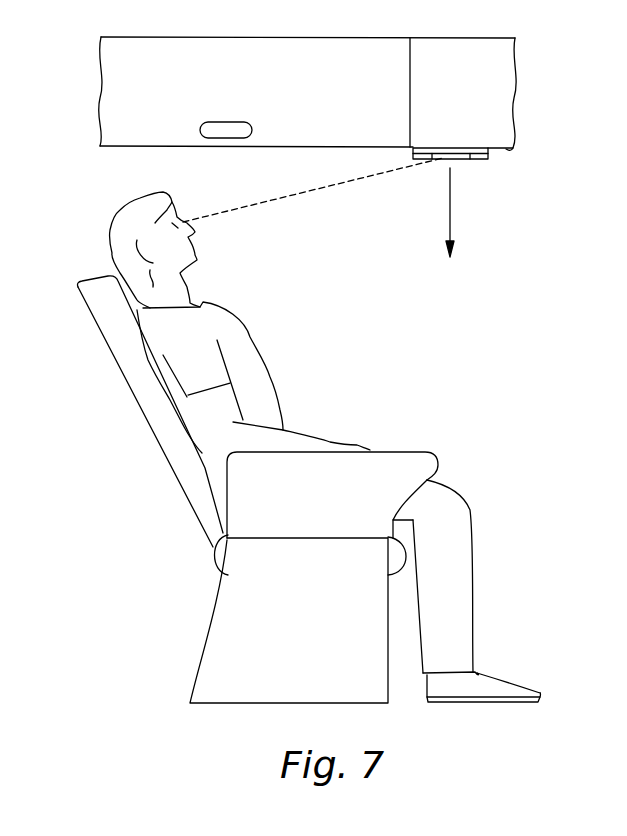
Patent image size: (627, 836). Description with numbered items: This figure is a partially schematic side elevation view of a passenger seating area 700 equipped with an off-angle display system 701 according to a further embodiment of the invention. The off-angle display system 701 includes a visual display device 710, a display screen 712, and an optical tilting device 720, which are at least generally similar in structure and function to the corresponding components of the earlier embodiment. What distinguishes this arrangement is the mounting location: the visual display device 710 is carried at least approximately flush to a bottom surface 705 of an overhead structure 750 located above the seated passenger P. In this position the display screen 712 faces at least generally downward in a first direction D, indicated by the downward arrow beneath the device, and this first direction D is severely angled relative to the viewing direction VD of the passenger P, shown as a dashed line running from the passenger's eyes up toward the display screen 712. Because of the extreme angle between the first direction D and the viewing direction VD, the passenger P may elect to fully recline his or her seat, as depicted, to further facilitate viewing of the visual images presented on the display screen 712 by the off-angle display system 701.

The passenger seating area 700 is at (447, 344).
The off-angle display system 701 is at (430, 193).
The bottom surface 705 is at (505, 157).
The visual display device 710 is at (410, 147).
The display screen 712 is at (432, 162).
The optical tilting device 720 is at (472, 162).
The overhead structure 750 is at (197, 96).
The passenger P is at (117, 211).
The viewing direction VD is at (297, 193).
The first direction D is at (452, 225).